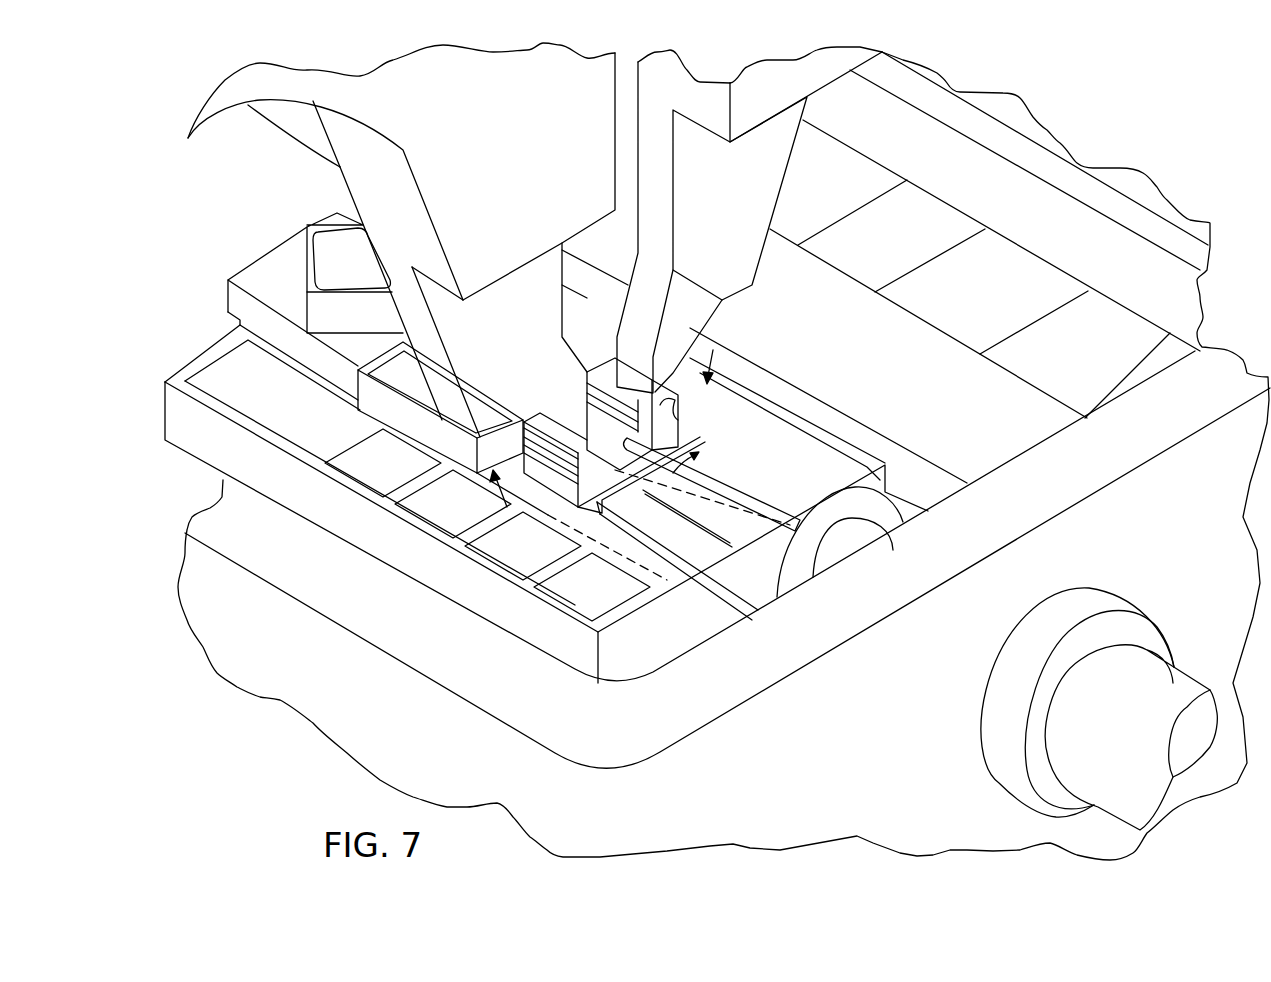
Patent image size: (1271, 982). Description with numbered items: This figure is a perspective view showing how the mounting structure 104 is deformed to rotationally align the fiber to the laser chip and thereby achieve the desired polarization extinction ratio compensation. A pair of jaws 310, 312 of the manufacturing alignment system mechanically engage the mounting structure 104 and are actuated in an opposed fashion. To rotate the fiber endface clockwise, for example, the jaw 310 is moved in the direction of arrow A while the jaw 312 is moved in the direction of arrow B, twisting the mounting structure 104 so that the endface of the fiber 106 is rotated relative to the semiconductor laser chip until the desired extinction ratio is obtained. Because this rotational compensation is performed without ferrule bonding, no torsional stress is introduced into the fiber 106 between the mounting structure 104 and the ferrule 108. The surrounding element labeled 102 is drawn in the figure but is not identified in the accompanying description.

The base body / platform 102 is at (776, 449).
The mounting structure 104 is at (683, 402).
The fiber 106 is at (753, 500).
The ferrule 108 is at (1133, 734).
The jaw 310 is at (783, 178).
The jaw 312 is at (427, 398).